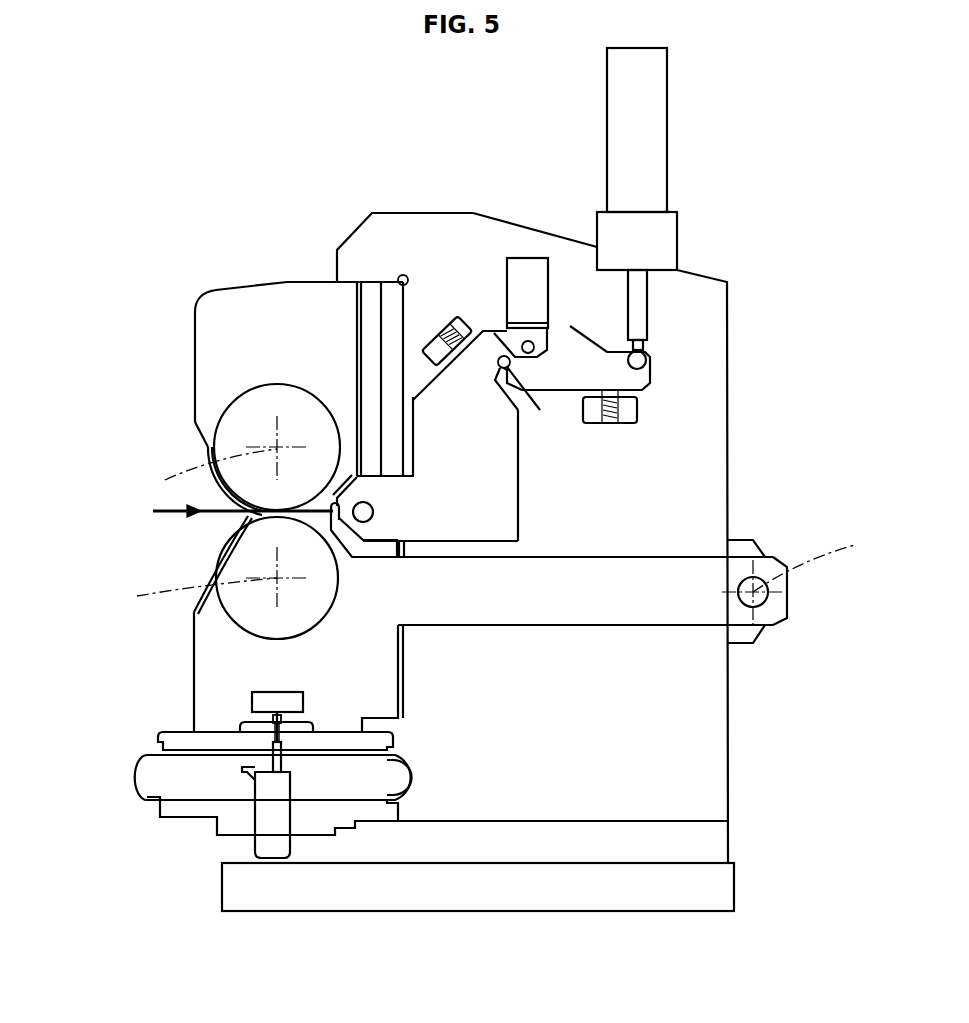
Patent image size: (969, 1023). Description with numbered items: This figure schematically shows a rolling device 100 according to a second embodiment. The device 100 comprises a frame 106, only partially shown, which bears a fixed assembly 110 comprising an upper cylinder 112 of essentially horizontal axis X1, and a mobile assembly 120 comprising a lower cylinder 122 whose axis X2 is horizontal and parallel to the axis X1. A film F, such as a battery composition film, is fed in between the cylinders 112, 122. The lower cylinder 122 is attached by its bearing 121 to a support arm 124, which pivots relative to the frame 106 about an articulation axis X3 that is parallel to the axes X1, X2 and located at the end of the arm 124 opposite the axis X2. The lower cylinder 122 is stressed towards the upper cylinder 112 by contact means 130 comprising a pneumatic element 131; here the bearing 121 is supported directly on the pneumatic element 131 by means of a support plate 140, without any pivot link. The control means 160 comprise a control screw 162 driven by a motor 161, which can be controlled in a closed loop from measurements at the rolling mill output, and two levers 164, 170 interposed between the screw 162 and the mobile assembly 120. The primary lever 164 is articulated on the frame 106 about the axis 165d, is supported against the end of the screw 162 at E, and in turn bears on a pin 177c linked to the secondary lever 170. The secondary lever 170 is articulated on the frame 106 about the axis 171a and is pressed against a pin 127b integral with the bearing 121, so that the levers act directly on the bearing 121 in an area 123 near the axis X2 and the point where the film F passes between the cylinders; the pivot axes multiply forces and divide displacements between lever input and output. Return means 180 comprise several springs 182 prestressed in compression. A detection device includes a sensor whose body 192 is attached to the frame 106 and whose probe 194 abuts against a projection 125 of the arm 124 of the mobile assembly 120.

The rolling device 100 is at (367, 132).
The frame 106 is at (352, 887).
The fixed assembly 110 is at (240, 378).
The upper cylinder 112 is at (235, 442).
The mobile assembly 120 is at (438, 672).
The bearing 121 is at (378, 668).
The lower cylinder 122 is at (247, 608).
The contact area 123 is at (311, 522).
The support arm 124 is at (687, 612).
The projection 125 is at (277, 702).
The pin 127b is at (327, 515).
The contact means 130 is at (422, 842).
The pneumatic element 131 is at (150, 773).
The support plate 140 is at (180, 740).
The control means 160 is at (583, 535).
The motor 161 is at (652, 113).
The control screw 162 is at (638, 308).
The primary lever 164 is at (580, 353).
The articulation axis of primary lever 165d is at (526, 347).
The secondary lever 170 is at (437, 428).
The articulation axis of secondary lever 171a is at (363, 522).
The pin 177c is at (505, 368).
The return means 180 is at (456, 318).
The spring 182 is at (443, 343).
The sensor body 192 is at (273, 808).
The probe 194 is at (259, 746).
The support point of primary lever on screw E is at (650, 347).
The film F is at (243, 497).
The axis of upper cylinder X1 is at (210, 476).
The axis of lower cylinder X2 is at (193, 598).
The articulation axis X3 is at (800, 574).